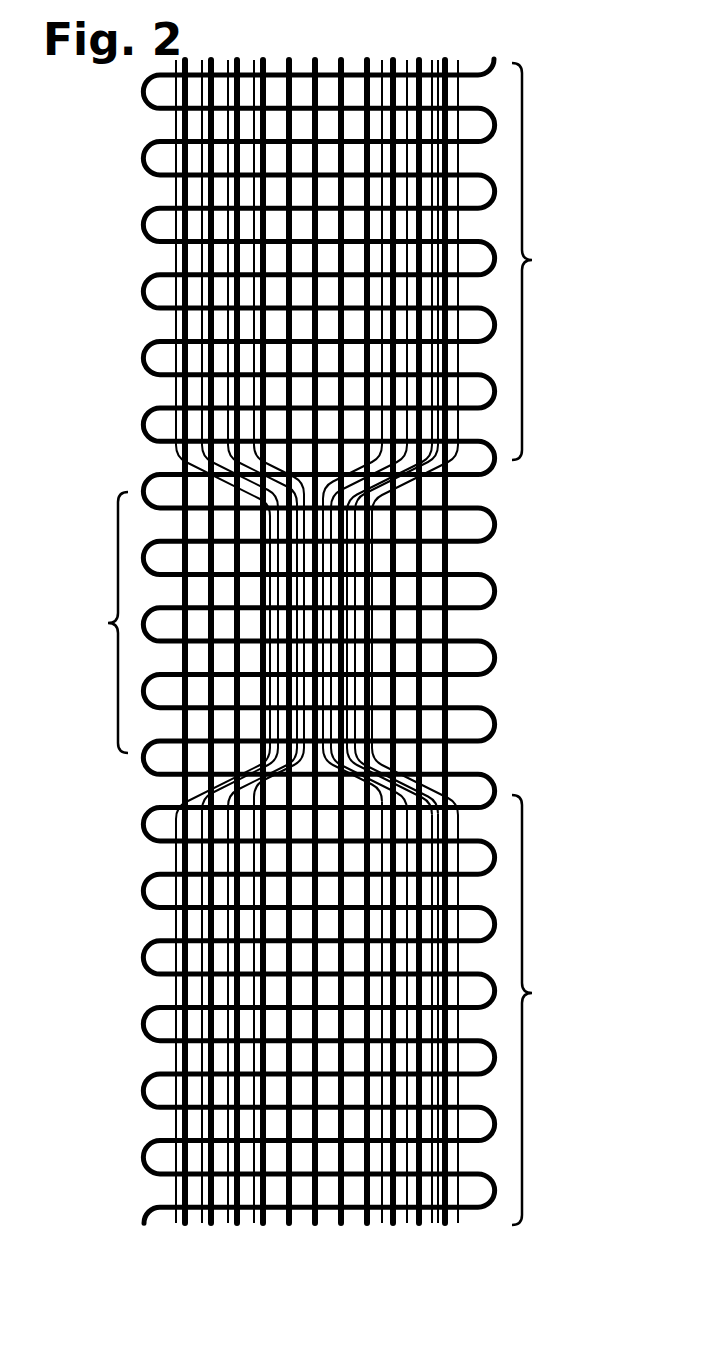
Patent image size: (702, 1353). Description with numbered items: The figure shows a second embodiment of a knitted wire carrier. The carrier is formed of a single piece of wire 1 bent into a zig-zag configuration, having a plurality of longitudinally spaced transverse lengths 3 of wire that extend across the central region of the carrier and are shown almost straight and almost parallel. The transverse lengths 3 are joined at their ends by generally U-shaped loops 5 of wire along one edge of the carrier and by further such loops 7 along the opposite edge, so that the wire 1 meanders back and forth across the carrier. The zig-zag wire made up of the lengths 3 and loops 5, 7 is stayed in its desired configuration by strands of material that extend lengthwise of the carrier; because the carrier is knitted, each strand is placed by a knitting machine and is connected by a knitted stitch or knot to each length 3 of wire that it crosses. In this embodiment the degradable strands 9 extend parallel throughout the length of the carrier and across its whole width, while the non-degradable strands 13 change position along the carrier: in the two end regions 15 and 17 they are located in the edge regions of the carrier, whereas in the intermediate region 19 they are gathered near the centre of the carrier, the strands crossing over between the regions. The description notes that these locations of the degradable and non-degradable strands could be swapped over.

The wire 1 is at (143, 152).
The transverse lengths of wire 3 is at (352, 138).
The U-shaped loops 5 is at (494, 656).
The loops 7 is at (143, 425).
The degradable strands 9 is at (457, 748).
The non-degradable strands 13 is at (255, 1027).
The region 15 is at (548, 261).
The region 17 is at (548, 1010).
The region 19 is at (95, 622).